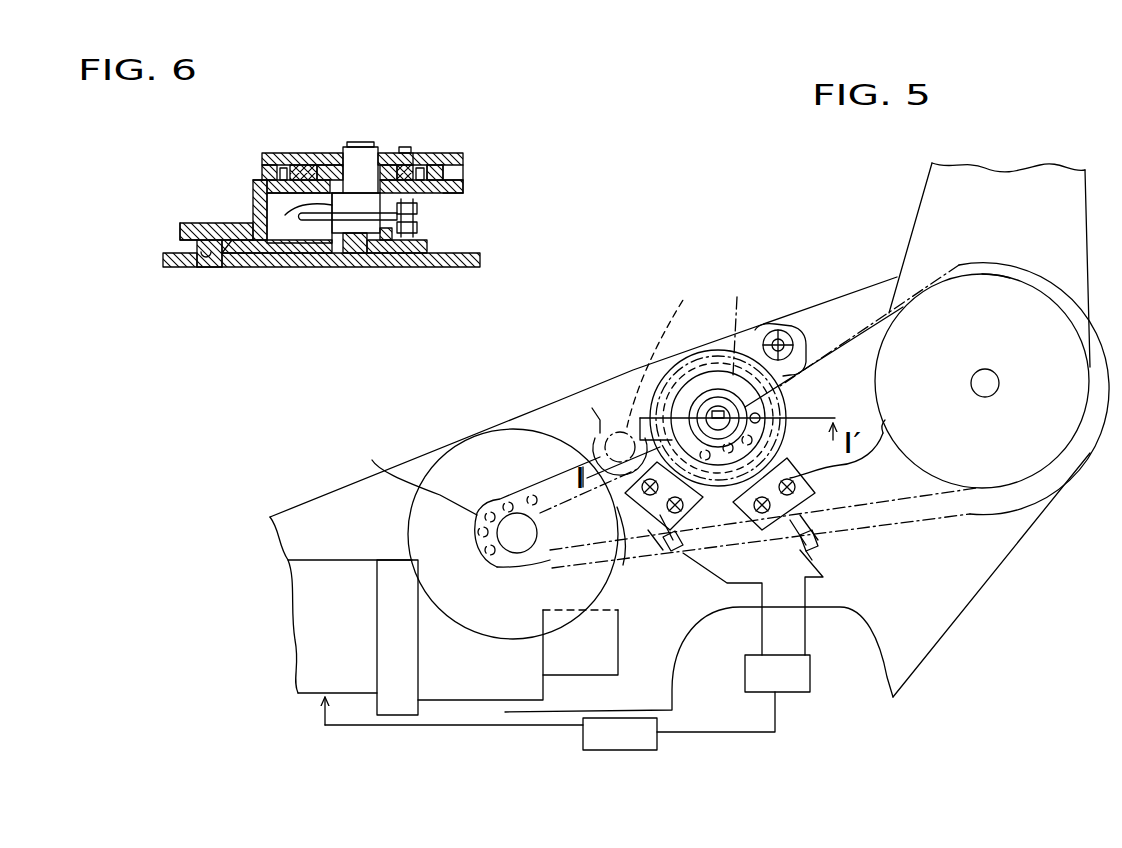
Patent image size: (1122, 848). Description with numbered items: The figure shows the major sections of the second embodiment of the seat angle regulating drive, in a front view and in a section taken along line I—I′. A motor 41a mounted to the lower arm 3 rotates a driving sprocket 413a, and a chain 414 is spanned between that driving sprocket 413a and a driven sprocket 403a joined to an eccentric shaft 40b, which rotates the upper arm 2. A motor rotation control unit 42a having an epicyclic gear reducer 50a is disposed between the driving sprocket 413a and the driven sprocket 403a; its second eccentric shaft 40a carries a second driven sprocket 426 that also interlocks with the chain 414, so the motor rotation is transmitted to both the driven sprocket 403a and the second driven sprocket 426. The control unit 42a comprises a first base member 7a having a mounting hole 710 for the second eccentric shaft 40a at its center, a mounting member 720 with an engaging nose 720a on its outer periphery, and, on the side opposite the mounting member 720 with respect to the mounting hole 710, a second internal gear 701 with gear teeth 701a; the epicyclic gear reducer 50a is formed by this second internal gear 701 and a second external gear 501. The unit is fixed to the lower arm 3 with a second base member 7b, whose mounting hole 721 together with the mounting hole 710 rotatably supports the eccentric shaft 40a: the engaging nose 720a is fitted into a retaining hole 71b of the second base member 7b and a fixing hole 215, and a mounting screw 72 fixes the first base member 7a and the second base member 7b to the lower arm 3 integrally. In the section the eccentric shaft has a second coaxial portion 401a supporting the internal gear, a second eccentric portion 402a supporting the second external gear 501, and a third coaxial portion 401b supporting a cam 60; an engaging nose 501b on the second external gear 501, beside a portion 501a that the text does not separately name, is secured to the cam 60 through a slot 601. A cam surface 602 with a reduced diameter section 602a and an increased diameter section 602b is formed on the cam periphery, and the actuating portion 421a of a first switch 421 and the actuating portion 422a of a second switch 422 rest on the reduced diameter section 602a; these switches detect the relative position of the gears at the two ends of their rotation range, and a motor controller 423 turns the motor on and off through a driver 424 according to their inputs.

In FIG. 5, the upper arm 2 is at (930, 218).
In FIG. 6, the lower arm 3 is at (255, 268).
In FIG. 5, the lower arm 3 is at (856, 292).
In FIG. 6, the first base member 7a is at (178, 228).
In FIG. 5, the first base member 7a is at (758, 330).
In FIG. 6, the second base member 7b is at (179, 238).
In FIG. 6, the second eccentric shaft 40a is at (360, 268).
In FIG. 5, the second eccentric shaft 40a is at (718, 392).
In FIG. 5, the eccentric shaft 40b is at (987, 397).
In FIG. 5, the motor 41a is at (313, 617).
In FIG. 6, the motor rotation control unit 42a is at (478, 135).
In FIG. 6, the epicyclic gear reducer 50a is at (455, 187).
In FIG. 5, the cam 60 is at (800, 552).
In FIG. 6, the retaining hole 71b is at (205, 258).
In FIG. 5, the mounting screw 72 is at (790, 328).
In FIG. 6, the fixing hole 215 is at (214, 268).
In FIG. 5, the fixing hole 215 is at (676, 361).
In FIG. 6, the second coaxial portion 401a is at (340, 142).
In FIG. 6, the third coaxial portion 401b is at (358, 147).
In FIG. 6, the second eccentric portion 402a is at (386, 153).
In FIG. 5, the driven sprocket 403a is at (975, 278).
In FIG. 5, the driving sprocket 413a is at (480, 534).
In FIG. 6, the chain 414 is at (418, 214).
In FIG. 5, the chain 414 is at (843, 388).
In FIG. 5, the first switch 421 is at (808, 478).
In FIG. 5, the actuating portion 421a is at (884, 432).
In FIG. 5, the second switch 422 is at (630, 560).
In FIG. 5, the actuating portion 422a is at (517, 510).
In FIG. 5, the motor controller 423 is at (753, 622).
In FIG. 5, the driver 424 is at (550, 722).
In FIG. 6, the second driven sprocket 426 is at (428, 246).
In FIG. 5, the second driven sprocket 426 is at (737, 297).
In FIG. 6, the second external gear 501 is at (303, 153).
In FIG. 6, the bearing flange 501a is at (457, 170).
In FIG. 6, the engaging nose 501b is at (405, 147).
In FIG. 6, the slot 601 is at (422, 153).
In FIG. 6, the cam surface 602 is at (251, 170).
In FIG. 5, the cam surface 602 is at (704, 490).
In FIG. 5, the reduced diameter section 602a is at (815, 553).
In FIG. 5, the increased diameter section 602b is at (840, 367).
In FIG. 6, the second internal gear 701 is at (273, 153).
In FIG. 6, the gear teeth 701a is at (463, 175).
In FIG. 6, the mounting hole 710 is at (300, 268).
In FIG. 6, the mounting member 720 is at (252, 215).
In FIG. 5, the mounting member 720 is at (600, 420).
In FIG. 6, the engaging nose 720a is at (208, 268).
In FIG. 5, the engaging nose 720a is at (614, 440).
In FIG. 6, the mounting hole 721 is at (326, 268).